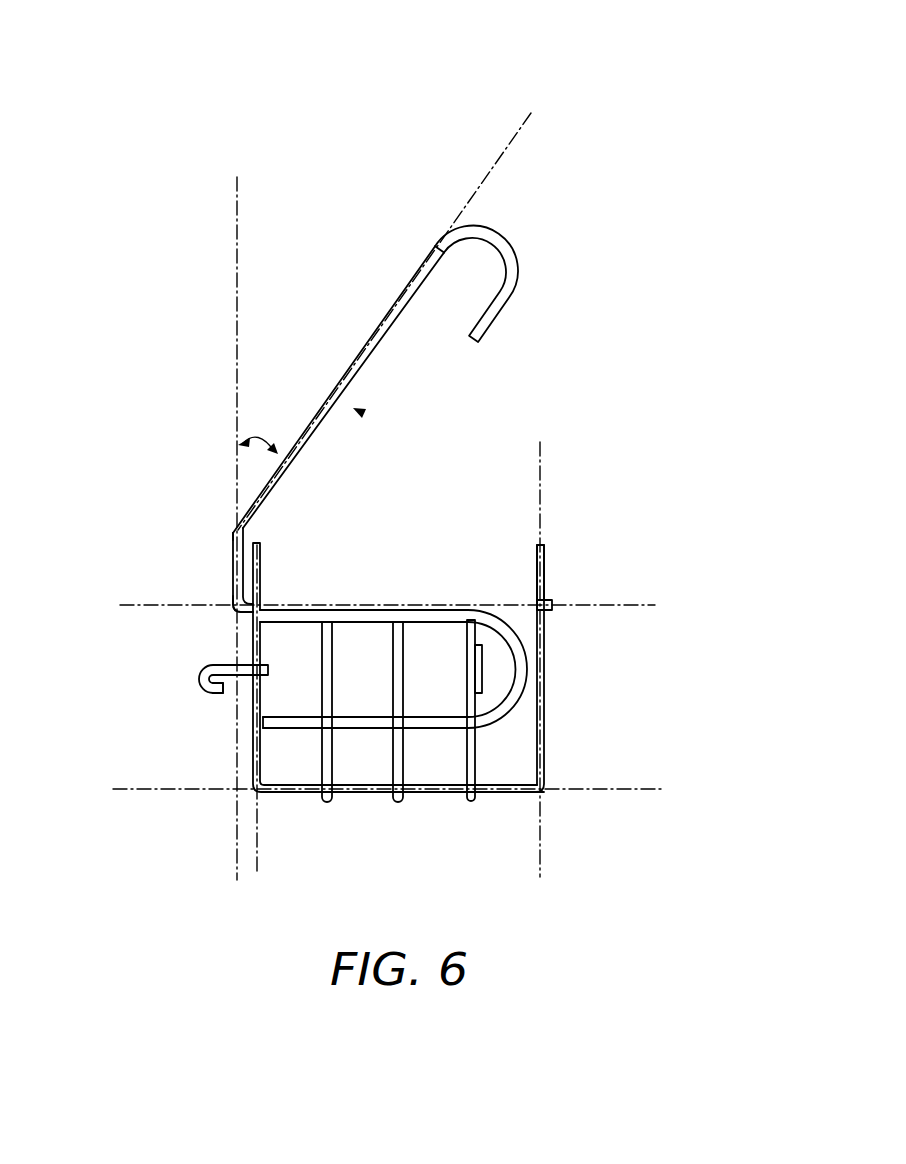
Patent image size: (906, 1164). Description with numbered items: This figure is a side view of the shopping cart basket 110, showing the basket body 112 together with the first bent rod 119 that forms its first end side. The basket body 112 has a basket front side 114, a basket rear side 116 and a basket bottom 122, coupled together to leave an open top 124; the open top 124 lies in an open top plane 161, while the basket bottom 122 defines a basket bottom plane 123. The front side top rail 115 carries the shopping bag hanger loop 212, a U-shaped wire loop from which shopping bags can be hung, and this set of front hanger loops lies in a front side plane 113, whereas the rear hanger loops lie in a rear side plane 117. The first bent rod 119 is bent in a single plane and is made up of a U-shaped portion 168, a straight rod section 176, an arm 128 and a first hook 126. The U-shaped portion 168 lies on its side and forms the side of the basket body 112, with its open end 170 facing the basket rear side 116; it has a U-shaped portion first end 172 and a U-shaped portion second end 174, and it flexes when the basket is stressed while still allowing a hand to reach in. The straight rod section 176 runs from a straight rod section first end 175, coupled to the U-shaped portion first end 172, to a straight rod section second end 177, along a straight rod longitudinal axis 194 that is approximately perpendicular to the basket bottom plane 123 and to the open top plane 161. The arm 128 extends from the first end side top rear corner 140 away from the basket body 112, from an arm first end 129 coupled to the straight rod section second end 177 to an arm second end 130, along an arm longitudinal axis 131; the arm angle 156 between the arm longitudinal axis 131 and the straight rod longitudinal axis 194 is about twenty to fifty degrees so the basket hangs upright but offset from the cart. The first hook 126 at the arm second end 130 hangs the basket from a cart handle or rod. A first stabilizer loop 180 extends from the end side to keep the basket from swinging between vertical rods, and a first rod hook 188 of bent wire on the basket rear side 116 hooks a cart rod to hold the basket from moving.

The shopping cart basket 110 is at (364, 106).
The basket body 112 is at (545, 755).
The front side plane 113 is at (540, 493).
The basket front side 114 is at (620, 694).
The front side top rail 115 is at (552, 603).
The basket rear side 116 is at (186, 735).
The rear side plane 117 is at (258, 853).
The first bent rod 119 is at (364, 413).
The basket bottom 122 is at (366, 840).
The basket bottom plane 123 is at (200, 790).
The open top 124 is at (332, 580).
The first hook 126 is at (507, 258).
The arm 128 is at (342, 378).
The arm first end 129 is at (233, 533).
The arm second end 130 is at (445, 232).
The arm longitudinal axis 131 is at (490, 163).
The first end side top rear corner 140 is at (150, 643).
The arm angle 156 is at (256, 440).
The open top plane 161 is at (120, 605).
The U-shaped portion 168 is at (428, 617).
The open end 170 is at (178, 679).
The U-shaped portion first end 172 is at (238, 614).
The U-shaped portion second end 174 is at (272, 723).
The straight rod section first end 175 is at (232, 603).
The straight rod section 176 is at (232, 570).
The straight rod section second end 177 is at (240, 532).
The first stabilizer loop 180 is at (482, 673).
The first rod hook 188 is at (212, 692).
The straight rod longitudinal axis 194 is at (237, 289).
The shopping bag hanger loop 212 is at (545, 553).